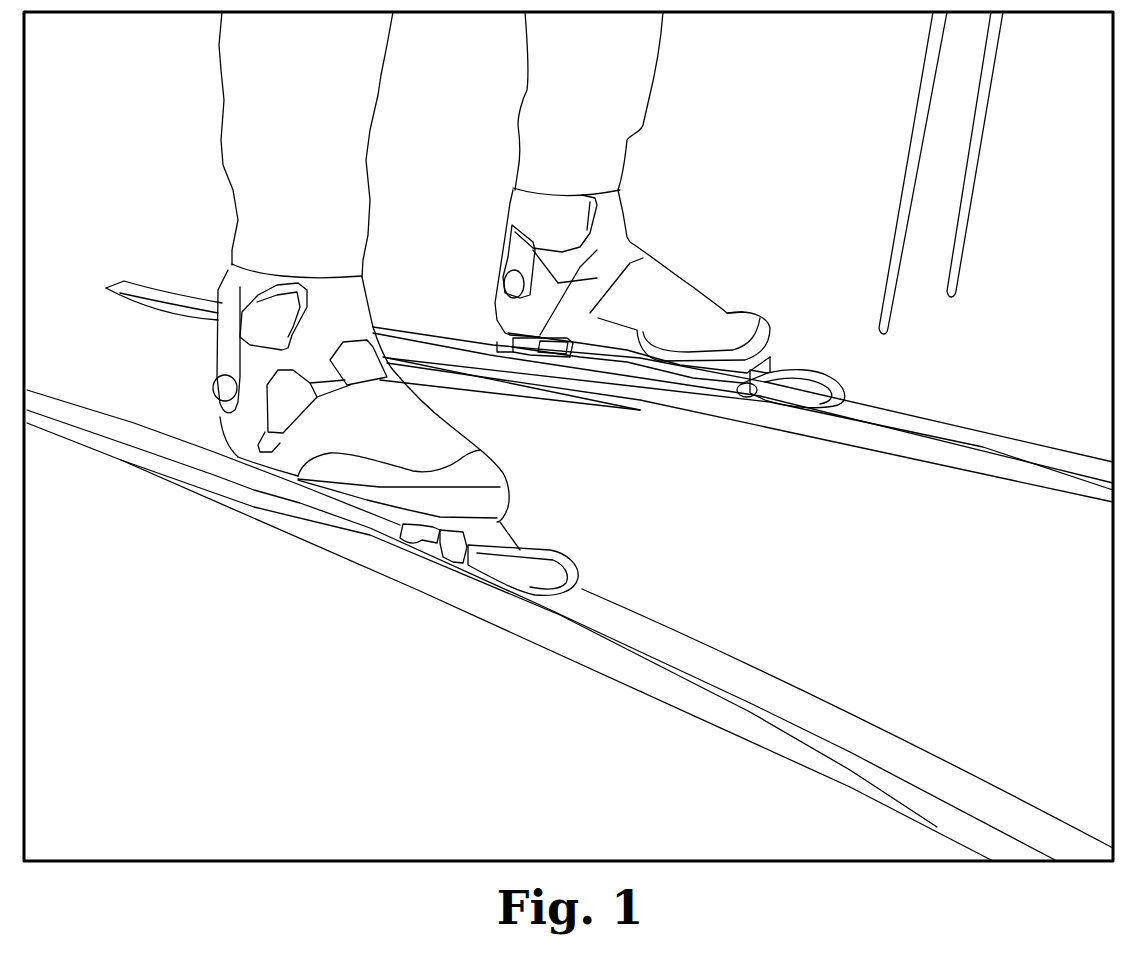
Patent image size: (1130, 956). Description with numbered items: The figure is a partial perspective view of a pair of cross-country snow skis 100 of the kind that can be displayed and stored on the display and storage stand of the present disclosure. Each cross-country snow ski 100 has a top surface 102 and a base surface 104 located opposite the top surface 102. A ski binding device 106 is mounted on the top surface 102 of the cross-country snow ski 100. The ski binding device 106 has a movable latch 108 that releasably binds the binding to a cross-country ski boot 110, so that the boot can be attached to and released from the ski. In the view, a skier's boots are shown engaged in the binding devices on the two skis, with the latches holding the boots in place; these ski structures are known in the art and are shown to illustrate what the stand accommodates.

The pair of cross-country snow skis 100 is at (940, 498).
The top surface 102 is at (735, 658).
The base surface 104 is at (484, 633).
The ski binding device 106 is at (520, 553).
The movable latch 108 is at (450, 563).
The cross-country ski boot 110 is at (458, 420).